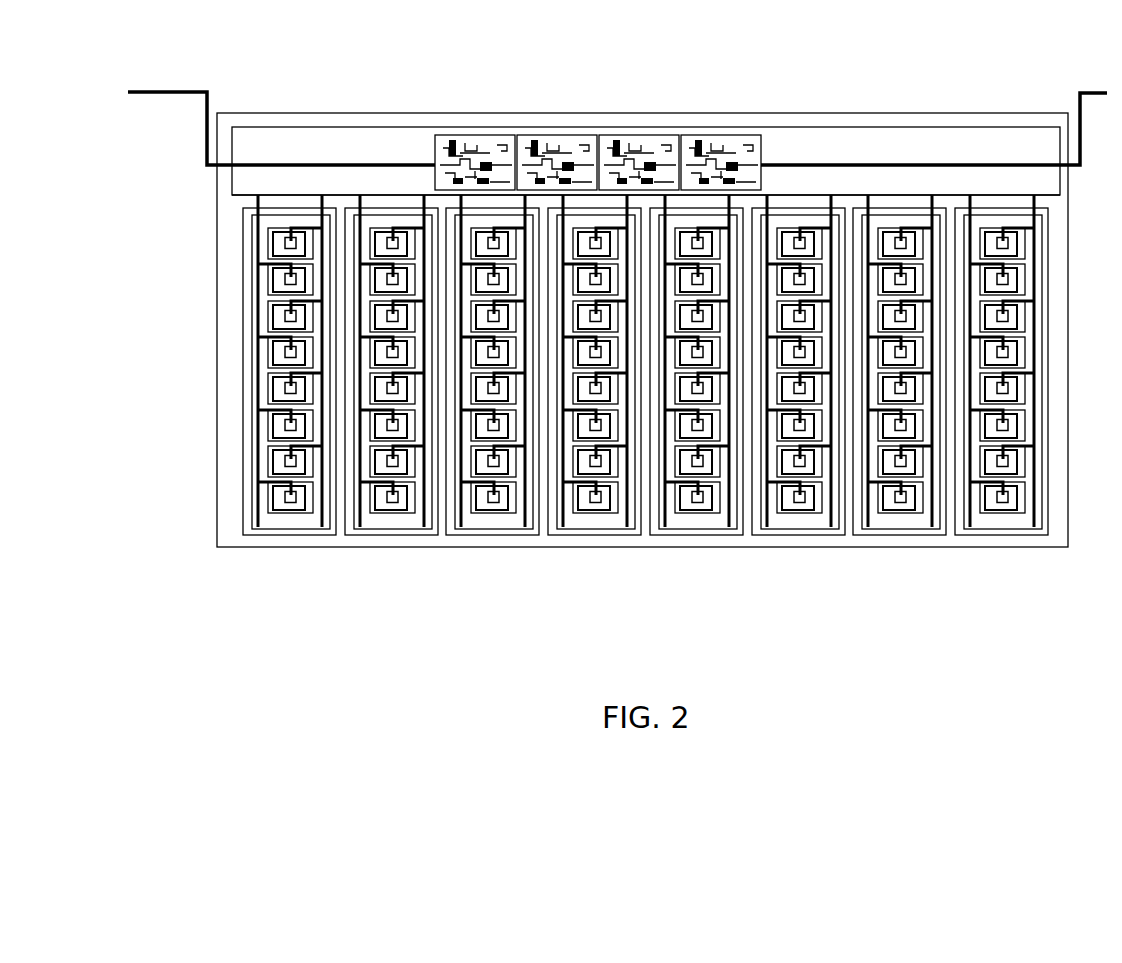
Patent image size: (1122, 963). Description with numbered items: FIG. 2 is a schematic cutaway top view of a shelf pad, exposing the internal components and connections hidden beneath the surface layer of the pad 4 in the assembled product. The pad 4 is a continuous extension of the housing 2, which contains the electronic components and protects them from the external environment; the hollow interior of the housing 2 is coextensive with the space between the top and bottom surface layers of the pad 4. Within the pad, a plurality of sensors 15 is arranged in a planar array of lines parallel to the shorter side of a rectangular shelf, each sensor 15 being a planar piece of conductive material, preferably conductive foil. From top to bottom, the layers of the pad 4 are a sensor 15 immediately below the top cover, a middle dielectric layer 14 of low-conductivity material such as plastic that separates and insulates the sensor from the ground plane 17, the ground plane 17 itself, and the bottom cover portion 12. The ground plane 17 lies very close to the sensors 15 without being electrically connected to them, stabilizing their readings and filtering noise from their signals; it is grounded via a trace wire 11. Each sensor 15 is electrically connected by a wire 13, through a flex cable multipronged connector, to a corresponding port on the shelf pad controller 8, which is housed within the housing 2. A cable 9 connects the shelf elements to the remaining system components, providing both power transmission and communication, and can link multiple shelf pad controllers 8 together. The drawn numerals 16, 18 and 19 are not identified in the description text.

The housing 2 is at (228, 180).
The pad 4 is at (535, 113).
The shelf pad controller 8 is at (438, 135).
The cable 9 is at (147, 98).
The trace wire 11 is at (238, 205).
The bottom cover portion 12 is at (218, 278).
The wire 13 is at (257, 447).
The dielectric layer 14 is at (272, 517).
The sensor 15 is at (292, 510).
The inner column boundary 16 is at (308, 528).
The ground plane 17 is at (325, 518).
The pixel column 18 is at (645, 533).
The connection line to adjacent column 19 is at (935, 482).